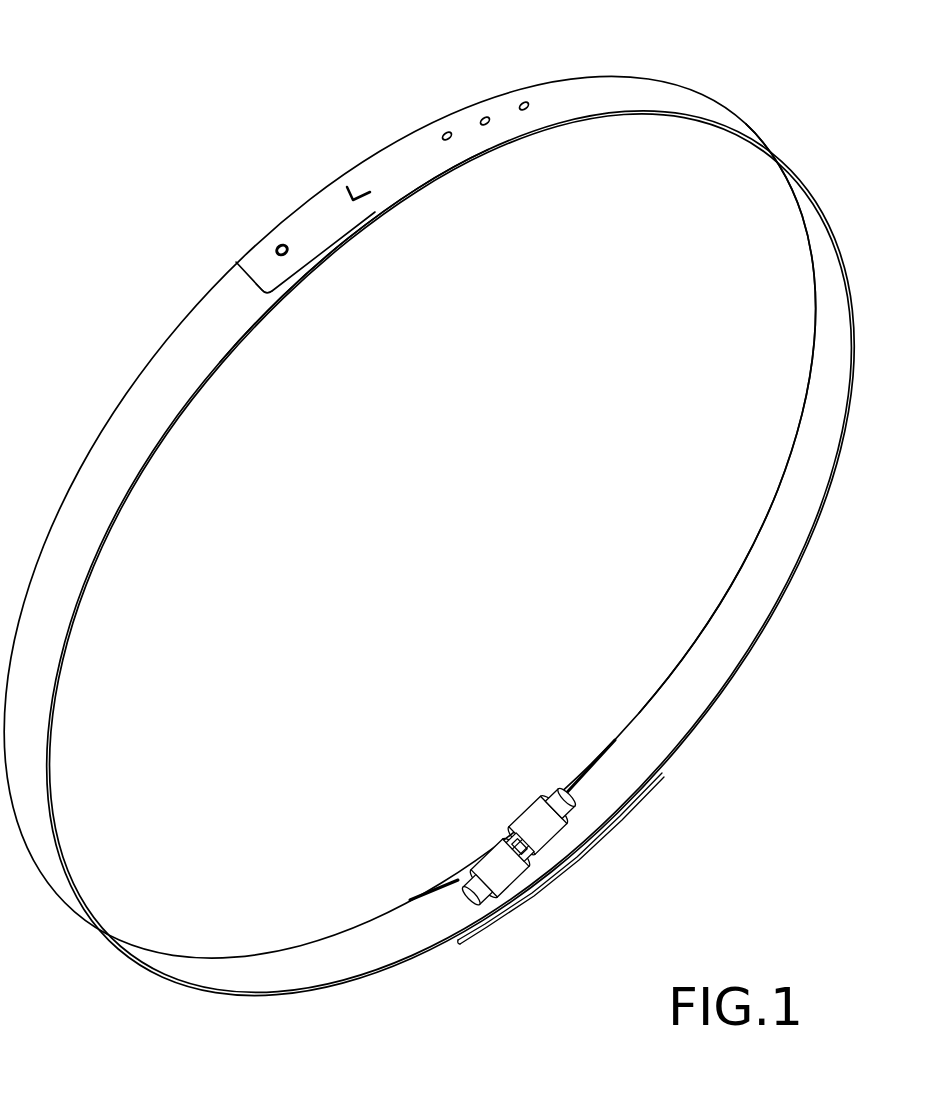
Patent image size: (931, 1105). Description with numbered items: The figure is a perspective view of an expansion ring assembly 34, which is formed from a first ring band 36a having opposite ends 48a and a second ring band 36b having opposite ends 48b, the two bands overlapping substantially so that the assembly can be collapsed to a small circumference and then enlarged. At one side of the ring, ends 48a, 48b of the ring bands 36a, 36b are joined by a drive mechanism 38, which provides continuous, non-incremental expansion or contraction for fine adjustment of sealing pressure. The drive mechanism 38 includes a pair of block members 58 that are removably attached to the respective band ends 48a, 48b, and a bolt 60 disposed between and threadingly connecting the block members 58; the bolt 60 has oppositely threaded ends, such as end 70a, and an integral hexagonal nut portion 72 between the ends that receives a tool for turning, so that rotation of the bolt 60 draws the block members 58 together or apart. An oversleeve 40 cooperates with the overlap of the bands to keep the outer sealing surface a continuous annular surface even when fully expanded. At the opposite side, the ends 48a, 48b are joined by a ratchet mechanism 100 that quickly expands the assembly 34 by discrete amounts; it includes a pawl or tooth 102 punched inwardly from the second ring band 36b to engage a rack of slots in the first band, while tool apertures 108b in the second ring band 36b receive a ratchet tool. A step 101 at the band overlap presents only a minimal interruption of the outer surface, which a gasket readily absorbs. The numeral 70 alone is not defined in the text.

The expansion ring assembly 34 is at (203, 95).
The first ring band 36a is at (98, 537).
The second ring band 36b is at (722, 617).
The drive mechanism 38 is at (501, 846).
The oversleeve 40 is at (610, 837).
The ends of first ring band 48a is at (367, 227).
The ends of second ring band 48b is at (288, 221).
The block members 58 is at (545, 815).
The bolt 60 is at (547, 867).
The nut 70 is at (590, 803).
The bolt end 70a is at (450, 880).
The hexagonal nut portion 72 is at (513, 832).
The ratchet mechanism 100 is at (431, 226).
The step 101 is at (251, 287).
The pawl or tooth 102 is at (360, 186).
The tool apertures 108b is at (522, 102).